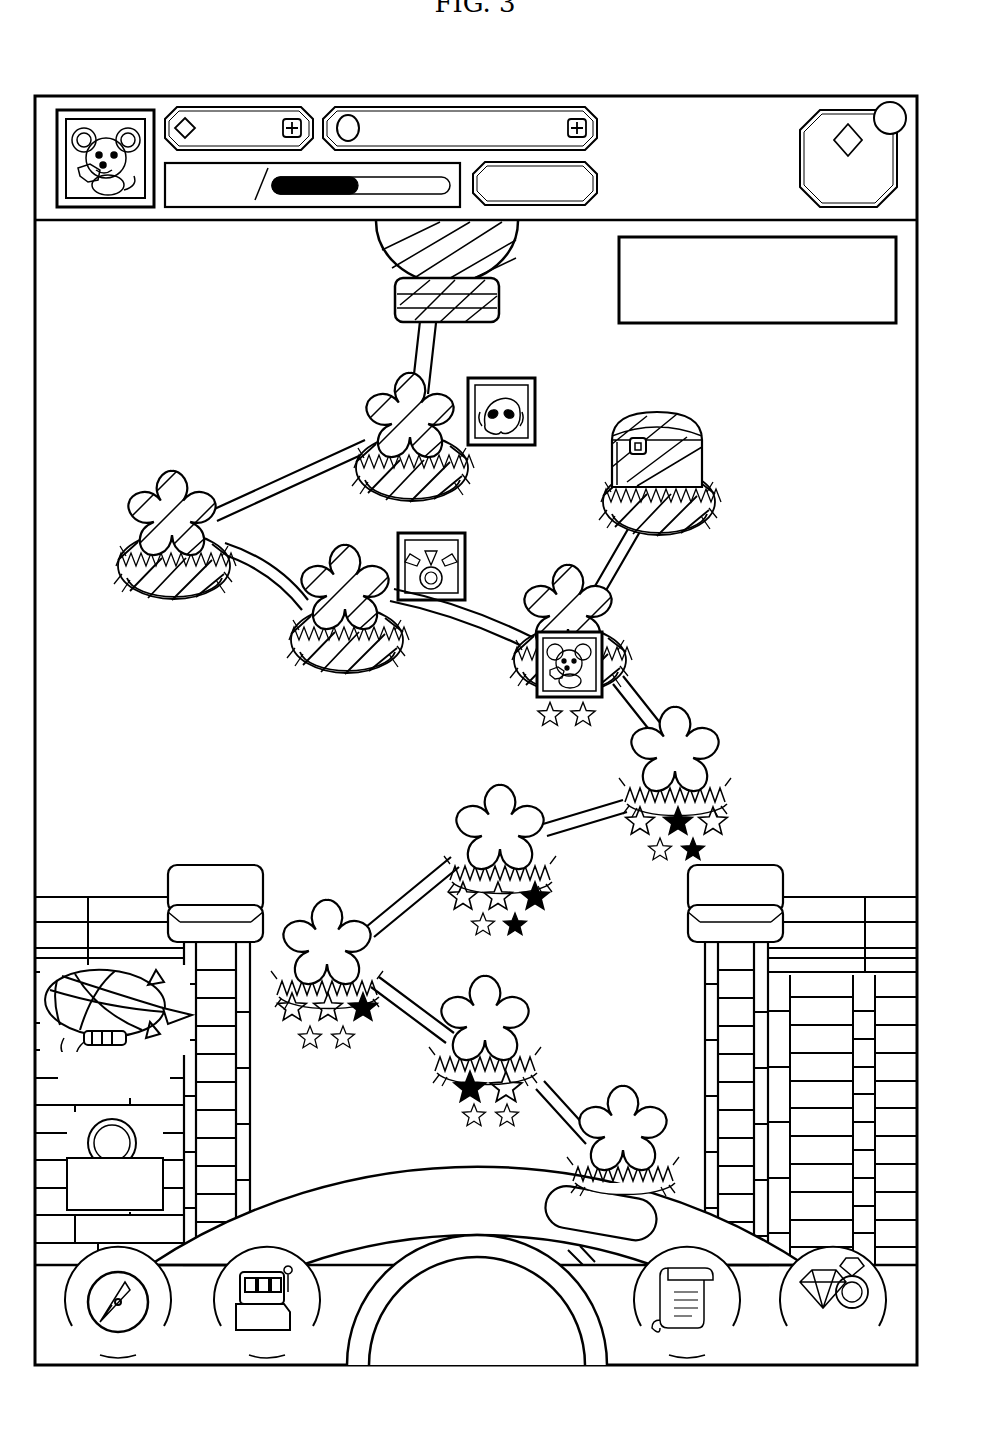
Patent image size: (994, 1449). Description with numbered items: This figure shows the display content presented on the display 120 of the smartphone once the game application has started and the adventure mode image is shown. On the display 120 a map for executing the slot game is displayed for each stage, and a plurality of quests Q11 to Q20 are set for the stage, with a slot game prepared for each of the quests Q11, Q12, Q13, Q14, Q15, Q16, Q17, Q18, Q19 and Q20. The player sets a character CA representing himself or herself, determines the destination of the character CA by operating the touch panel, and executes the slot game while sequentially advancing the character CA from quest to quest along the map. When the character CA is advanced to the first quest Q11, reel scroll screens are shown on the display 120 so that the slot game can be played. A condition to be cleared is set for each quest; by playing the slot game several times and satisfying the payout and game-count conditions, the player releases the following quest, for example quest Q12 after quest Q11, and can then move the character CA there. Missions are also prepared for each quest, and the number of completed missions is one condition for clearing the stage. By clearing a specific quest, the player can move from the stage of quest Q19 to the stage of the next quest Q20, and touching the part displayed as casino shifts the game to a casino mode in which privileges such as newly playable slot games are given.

The display 120 is at (618, 78).
The first quest Q11 is at (632, 1074).
The quest Q12 is at (537, 1005).
The quest Q13 is at (335, 896).
The quest Q14 is at (452, 811).
The quest Q15 is at (722, 733).
The quest Q16 is at (640, 641).
The quest Q17 is at (722, 487).
The quest Q18 is at (280, 660).
The quest Q19 is at (194, 468).
The quest Q20 is at (354, 400).
The character CA is at (582, 668).